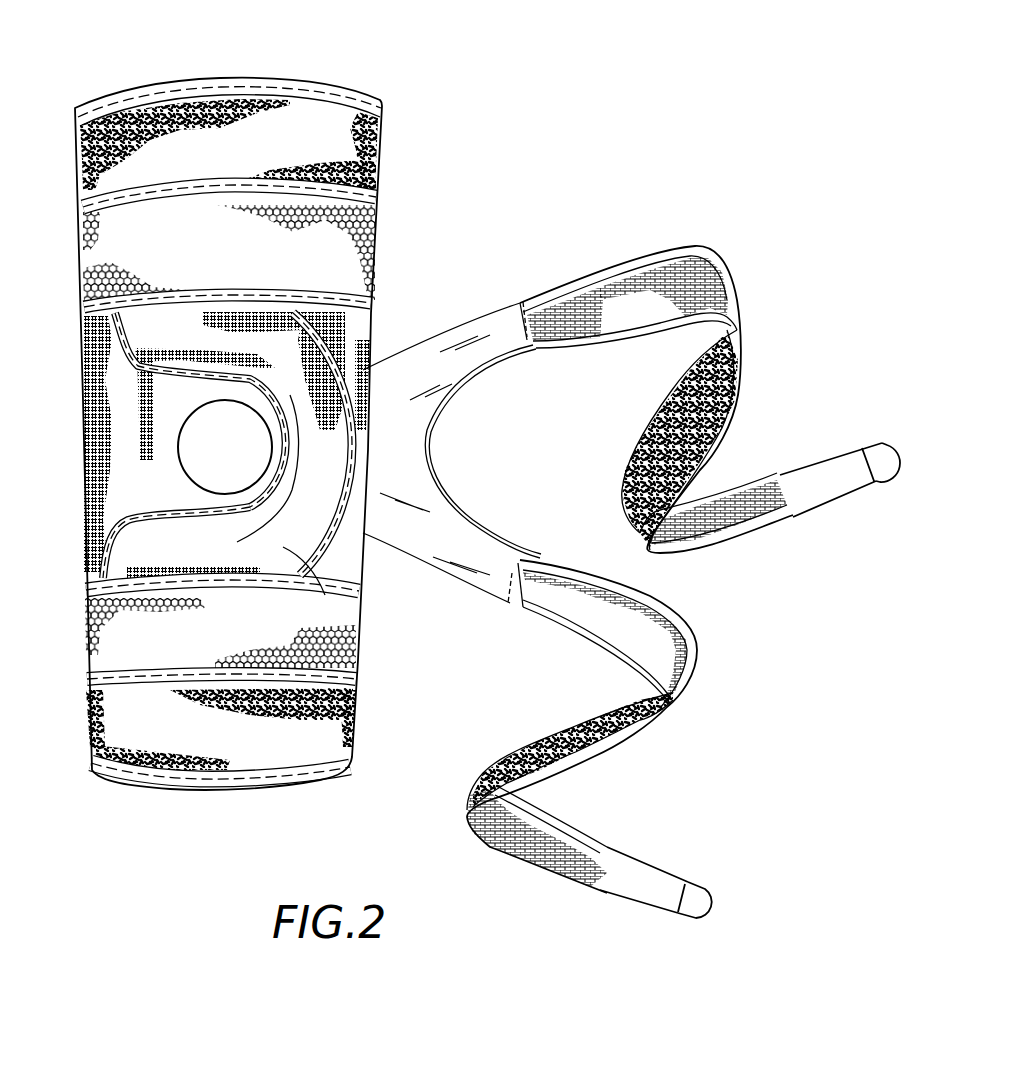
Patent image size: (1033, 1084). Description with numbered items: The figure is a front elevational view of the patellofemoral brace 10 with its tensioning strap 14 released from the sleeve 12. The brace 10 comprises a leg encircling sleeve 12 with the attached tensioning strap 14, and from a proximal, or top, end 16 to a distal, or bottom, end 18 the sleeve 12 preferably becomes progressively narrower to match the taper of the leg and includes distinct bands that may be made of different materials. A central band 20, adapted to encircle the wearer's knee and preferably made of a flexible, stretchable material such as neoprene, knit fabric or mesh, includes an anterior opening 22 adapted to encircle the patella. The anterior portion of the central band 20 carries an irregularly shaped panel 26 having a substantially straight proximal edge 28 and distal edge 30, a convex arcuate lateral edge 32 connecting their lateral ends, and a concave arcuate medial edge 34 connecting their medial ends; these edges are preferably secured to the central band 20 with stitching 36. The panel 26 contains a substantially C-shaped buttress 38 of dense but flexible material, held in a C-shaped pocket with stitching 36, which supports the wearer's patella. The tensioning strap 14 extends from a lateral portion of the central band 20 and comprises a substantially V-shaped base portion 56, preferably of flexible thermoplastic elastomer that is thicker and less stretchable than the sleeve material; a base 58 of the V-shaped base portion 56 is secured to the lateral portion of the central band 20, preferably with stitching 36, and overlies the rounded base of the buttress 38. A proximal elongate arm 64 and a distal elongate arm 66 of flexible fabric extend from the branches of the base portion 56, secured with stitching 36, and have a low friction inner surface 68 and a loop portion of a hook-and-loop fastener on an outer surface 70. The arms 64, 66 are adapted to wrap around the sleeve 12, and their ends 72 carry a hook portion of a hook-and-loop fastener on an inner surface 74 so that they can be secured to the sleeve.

The brace 10 is at (532, 160).
The sleeve 12 is at (78, 484).
The tensioning strap 14 is at (800, 561).
The proximal end 16 is at (170, 78).
The distal end 18 is at (140, 790).
The central band 20 is at (105, 373).
The anterior opening 22 is at (203, 455).
The panel 26 is at (102, 540).
The proximal edge 28 is at (83, 197).
The distal edge 30 is at (87, 618).
The lateral edge 32 is at (370, 336).
The medial edge 34 is at (130, 417).
The stitching 36 is at (115, 342).
The buttress 38 is at (350, 578).
The base portion 56 is at (485, 310).
The base of the V 58 is at (400, 403).
The proximal elongate arm 64 is at (700, 248).
The distal elongate arm 66 is at (697, 622).
The inner surface 68 is at (727, 288).
The outer surface 70 is at (652, 433).
The ends 72 is at (887, 453).
The inner surface 74 is at (833, 462).